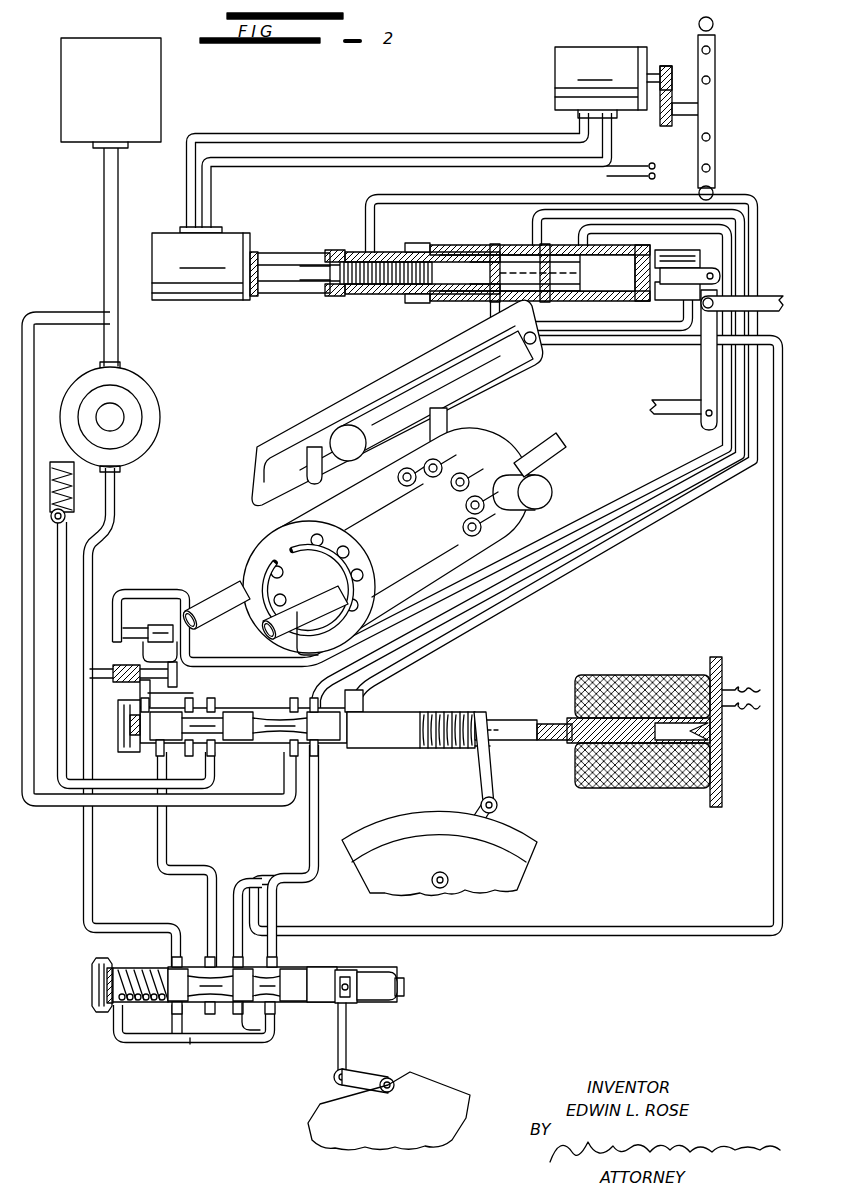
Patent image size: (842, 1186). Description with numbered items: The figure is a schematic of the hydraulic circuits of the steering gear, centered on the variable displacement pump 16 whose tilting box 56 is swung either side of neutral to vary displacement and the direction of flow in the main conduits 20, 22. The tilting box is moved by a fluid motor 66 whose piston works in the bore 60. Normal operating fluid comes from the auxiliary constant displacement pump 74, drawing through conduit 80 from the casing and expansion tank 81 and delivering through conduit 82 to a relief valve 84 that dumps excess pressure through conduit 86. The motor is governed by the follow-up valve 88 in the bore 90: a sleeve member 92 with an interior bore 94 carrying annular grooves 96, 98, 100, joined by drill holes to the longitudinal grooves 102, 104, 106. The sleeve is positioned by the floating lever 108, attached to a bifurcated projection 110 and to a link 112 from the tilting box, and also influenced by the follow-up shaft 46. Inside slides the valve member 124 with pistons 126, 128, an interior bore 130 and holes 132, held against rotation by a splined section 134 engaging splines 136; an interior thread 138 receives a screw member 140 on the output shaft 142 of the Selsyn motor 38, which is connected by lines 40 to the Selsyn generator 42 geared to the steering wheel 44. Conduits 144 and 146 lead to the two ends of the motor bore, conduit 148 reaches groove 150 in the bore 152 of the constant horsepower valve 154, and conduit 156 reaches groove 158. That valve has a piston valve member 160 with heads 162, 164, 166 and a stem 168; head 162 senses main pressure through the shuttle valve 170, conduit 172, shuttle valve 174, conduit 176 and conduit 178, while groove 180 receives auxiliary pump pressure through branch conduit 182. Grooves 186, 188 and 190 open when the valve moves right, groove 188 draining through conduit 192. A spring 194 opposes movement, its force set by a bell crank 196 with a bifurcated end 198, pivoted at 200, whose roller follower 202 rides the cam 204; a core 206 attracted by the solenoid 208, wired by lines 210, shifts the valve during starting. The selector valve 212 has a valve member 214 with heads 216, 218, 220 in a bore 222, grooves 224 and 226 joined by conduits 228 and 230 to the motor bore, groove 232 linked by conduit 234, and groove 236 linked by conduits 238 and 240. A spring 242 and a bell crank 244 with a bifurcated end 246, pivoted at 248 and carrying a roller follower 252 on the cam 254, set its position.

The variable displacement pump 16 is at (390, 524).
The conduit 20 is at (208, 600).
The conduit 22 is at (306, 600).
The Selsyn motor 38 is at (201, 263).
The lines 40 is at (366, 140).
The Selsyn generator 42 is at (601, 82).
The steering wheel 44 is at (714, 100).
The follow-up shaft 46 is at (746, 302).
The tilting box 56 is at (485, 455).
The bore 60 is at (314, 478).
The fluid motor 66 is at (512, 380).
The auxiliary constant displacement pump 74 is at (152, 388).
The conduit 80 is at (118, 346).
The expansion tank 81 is at (111, 202).
The conduit 82 is at (116, 492).
The relief valve 84 is at (66, 514).
The conduit 86 is at (52, 464).
The follow-up valve 88 is at (444, 240).
The bore 90 is at (650, 308).
The sleeve member 92 is at (677, 267).
The interior bore 94 is at (615, 273).
The annular groove 96 is at (502, 244).
The annular groove 98 is at (583, 244).
The annular groove 100 is at (585, 318).
The longitudinal grooves 102 is at (490, 244).
The longitudinal grooves 104 is at (543, 244).
The longitudinal grooves 106 is at (600, 246).
The floating lever 108 is at (703, 372).
The bifurcated projection 110 is at (692, 292).
The link 112 is at (664, 415).
The valve member 124 is at (544, 303).
The piston 126 is at (600, 286).
The piston 128 is at (484, 304).
The interior bore 130 is at (400, 268).
The holes 132 is at (418, 304).
The splined section 134 is at (332, 285).
The splines 136 is at (286, 293).
The interior thread 138 is at (386, 288).
The screw member 140 is at (338, 252).
The output shaft 142 is at (282, 262).
The conduit 144 is at (365, 392).
The conduit 146 is at (544, 342).
The conduit 148 is at (690, 226).
The groove 150 is at (190, 756).
The bore 152 is at (290, 752).
The constant horsepower valve 154 is at (255, 801).
The conduit 156 is at (364, 215).
The groove 158 is at (364, 700).
The piston valve member 160 is at (330, 748).
The piston head 162 is at (186, 726).
The piston head 164 is at (265, 726).
The piston head 166 is at (323, 726).
The stem 168 is at (532, 722).
The shuttle valve 170 is at (156, 626).
The conduit 172 is at (200, 660).
The shuttle valve 174 is at (122, 692).
The conduit 176 is at (165, 700).
The conduit 178 is at (68, 590).
The groove 180 is at (222, 704).
The branch conduit 182 is at (63, 806).
The groove 186 is at (158, 754).
The groove 188 is at (302, 702).
The groove 190 is at (316, 704).
The conduit 192 is at (258, 808).
The spring 194 is at (426, 712).
The bell crank 196 is at (492, 800).
The bifurcated end 198 is at (498, 760).
The pivot 200 is at (498, 816).
The roller follower 202 is at (450, 880).
The cam 204 is at (439, 853).
The core 206 is at (548, 720).
The solenoid 208 is at (648, 682).
The lines 210 is at (740, 690).
The selector valve 212 is at (262, 1064).
The valve member 214 is at (272, 998).
The piston head 216 is at (326, 968).
The piston head 218 is at (236, 948).
The piston head 220 is at (172, 968).
The bore 222 is at (375, 968).
The groove 224 is at (258, 1028).
The groove 226 is at (176, 1026).
The conduit 228 is at (632, 934).
The conduit 230 is at (126, 922).
The groove 232 is at (204, 936).
The conduit 234 is at (195, 868).
The groove 236 is at (278, 958).
The conduit 238 is at (286, 876).
The conduit 240 is at (202, 1044).
The spring 242 is at (118, 1008).
The bell crank 244 is at (348, 1032).
The bifurcated end 246 is at (402, 996).
The pivot 248 is at (332, 1080).
The roller follower 252 is at (398, 1090).
The cam 254 is at (389, 1111).